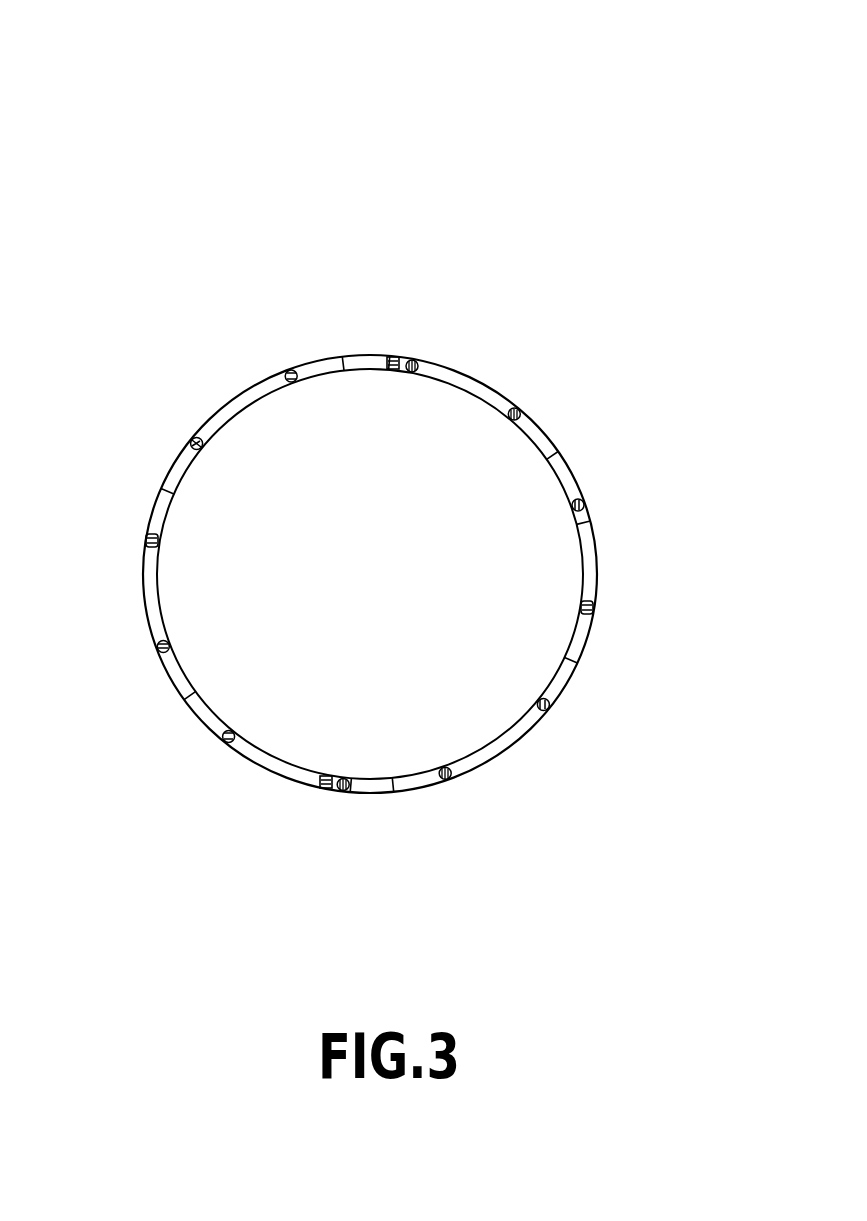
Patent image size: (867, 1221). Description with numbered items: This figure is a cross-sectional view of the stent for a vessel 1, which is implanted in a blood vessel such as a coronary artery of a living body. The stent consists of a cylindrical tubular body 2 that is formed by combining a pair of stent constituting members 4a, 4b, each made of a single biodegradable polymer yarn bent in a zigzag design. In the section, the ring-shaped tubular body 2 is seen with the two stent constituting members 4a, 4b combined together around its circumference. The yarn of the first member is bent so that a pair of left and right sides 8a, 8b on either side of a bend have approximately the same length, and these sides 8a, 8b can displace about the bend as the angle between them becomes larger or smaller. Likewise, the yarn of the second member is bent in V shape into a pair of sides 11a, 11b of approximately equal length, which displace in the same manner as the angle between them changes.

The stent for a vessel 1 is at (716, 98).
The tubular body 2 is at (586, 517).
The stent constituting member 4a is at (146, 541).
The stent constituting member 4b is at (593, 611).
The side 8a is at (388, 357).
The side 8b is at (284, 370).
The side 11a is at (418, 362).
The side 11b is at (520, 408).